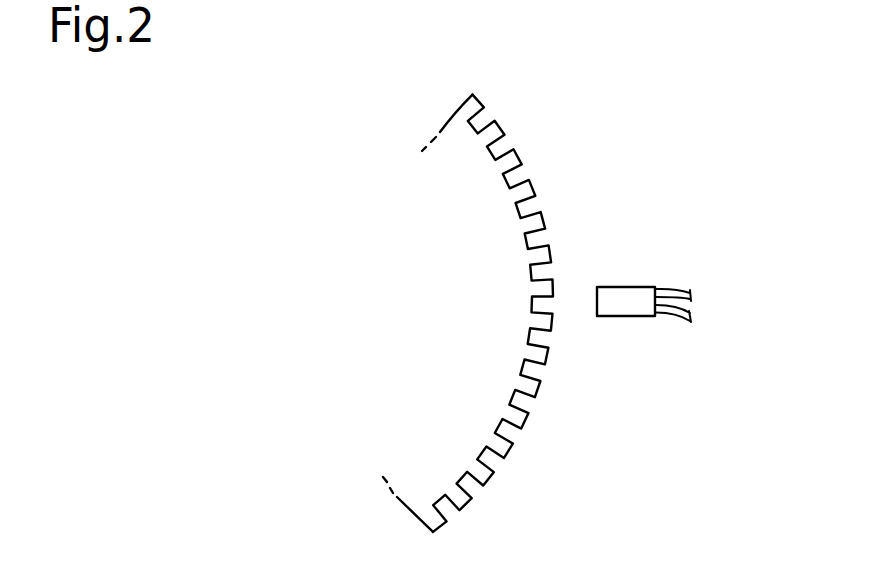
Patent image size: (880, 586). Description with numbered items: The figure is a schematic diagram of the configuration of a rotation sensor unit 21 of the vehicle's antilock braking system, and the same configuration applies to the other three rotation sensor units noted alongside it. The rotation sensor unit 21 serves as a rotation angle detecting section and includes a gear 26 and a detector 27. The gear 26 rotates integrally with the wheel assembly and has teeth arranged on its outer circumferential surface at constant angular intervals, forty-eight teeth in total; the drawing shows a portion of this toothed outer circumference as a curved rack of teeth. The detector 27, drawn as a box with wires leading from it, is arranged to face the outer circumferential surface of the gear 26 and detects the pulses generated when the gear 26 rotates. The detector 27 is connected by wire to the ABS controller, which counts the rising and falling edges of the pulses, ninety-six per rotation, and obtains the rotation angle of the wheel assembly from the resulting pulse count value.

The first rotation sensor unit 21 is at (575, 298).
The gear 26 is at (481, 164).
The detector 27 is at (624, 287).